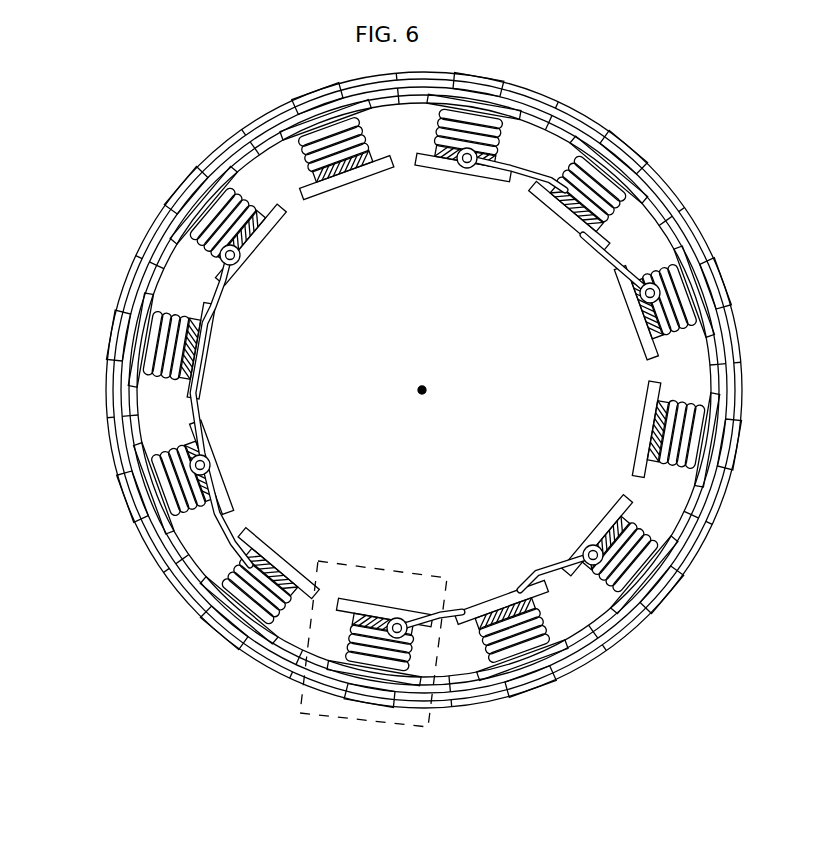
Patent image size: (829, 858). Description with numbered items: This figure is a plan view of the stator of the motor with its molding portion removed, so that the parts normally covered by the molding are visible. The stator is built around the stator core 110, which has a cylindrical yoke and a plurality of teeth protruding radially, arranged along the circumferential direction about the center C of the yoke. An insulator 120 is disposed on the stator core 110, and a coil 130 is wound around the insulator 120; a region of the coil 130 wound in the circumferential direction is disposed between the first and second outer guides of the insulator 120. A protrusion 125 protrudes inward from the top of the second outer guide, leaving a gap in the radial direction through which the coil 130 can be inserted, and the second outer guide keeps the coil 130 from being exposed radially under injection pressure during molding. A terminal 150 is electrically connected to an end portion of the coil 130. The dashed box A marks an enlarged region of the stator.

The stator core 110 is at (153, 573).
The insulator 120 is at (436, 177).
The protrusion 125 is at (185, 182).
The coil 130 is at (122, 430).
The terminal 150 is at (200, 343).
The center C is at (434, 391).
The enlarged region A is at (373, 650).